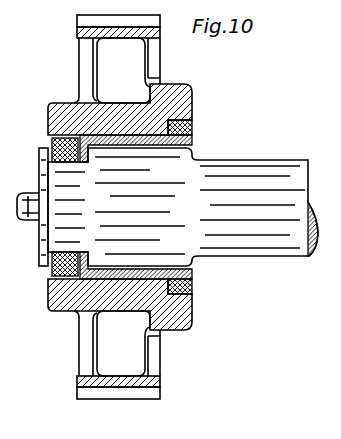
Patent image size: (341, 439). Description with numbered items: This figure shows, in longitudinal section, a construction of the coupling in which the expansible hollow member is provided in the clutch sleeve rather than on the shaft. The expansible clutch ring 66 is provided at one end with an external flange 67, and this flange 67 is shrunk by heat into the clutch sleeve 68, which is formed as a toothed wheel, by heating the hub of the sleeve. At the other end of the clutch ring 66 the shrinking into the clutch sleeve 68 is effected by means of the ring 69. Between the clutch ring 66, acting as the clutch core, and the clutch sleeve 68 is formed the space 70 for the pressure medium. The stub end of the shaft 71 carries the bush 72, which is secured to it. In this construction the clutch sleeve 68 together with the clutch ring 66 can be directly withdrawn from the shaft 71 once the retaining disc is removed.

The expansible clutch ring 66 is at (50, 133).
The external flange 67 is at (188, 128).
The clutch sleeve 68 is at (185, 88).
The ring 69 is at (58, 275).
The space for the pressure medium 70 is at (120, 270).
The shaft 71 is at (268, 240).
The bush 72 is at (194, 144).